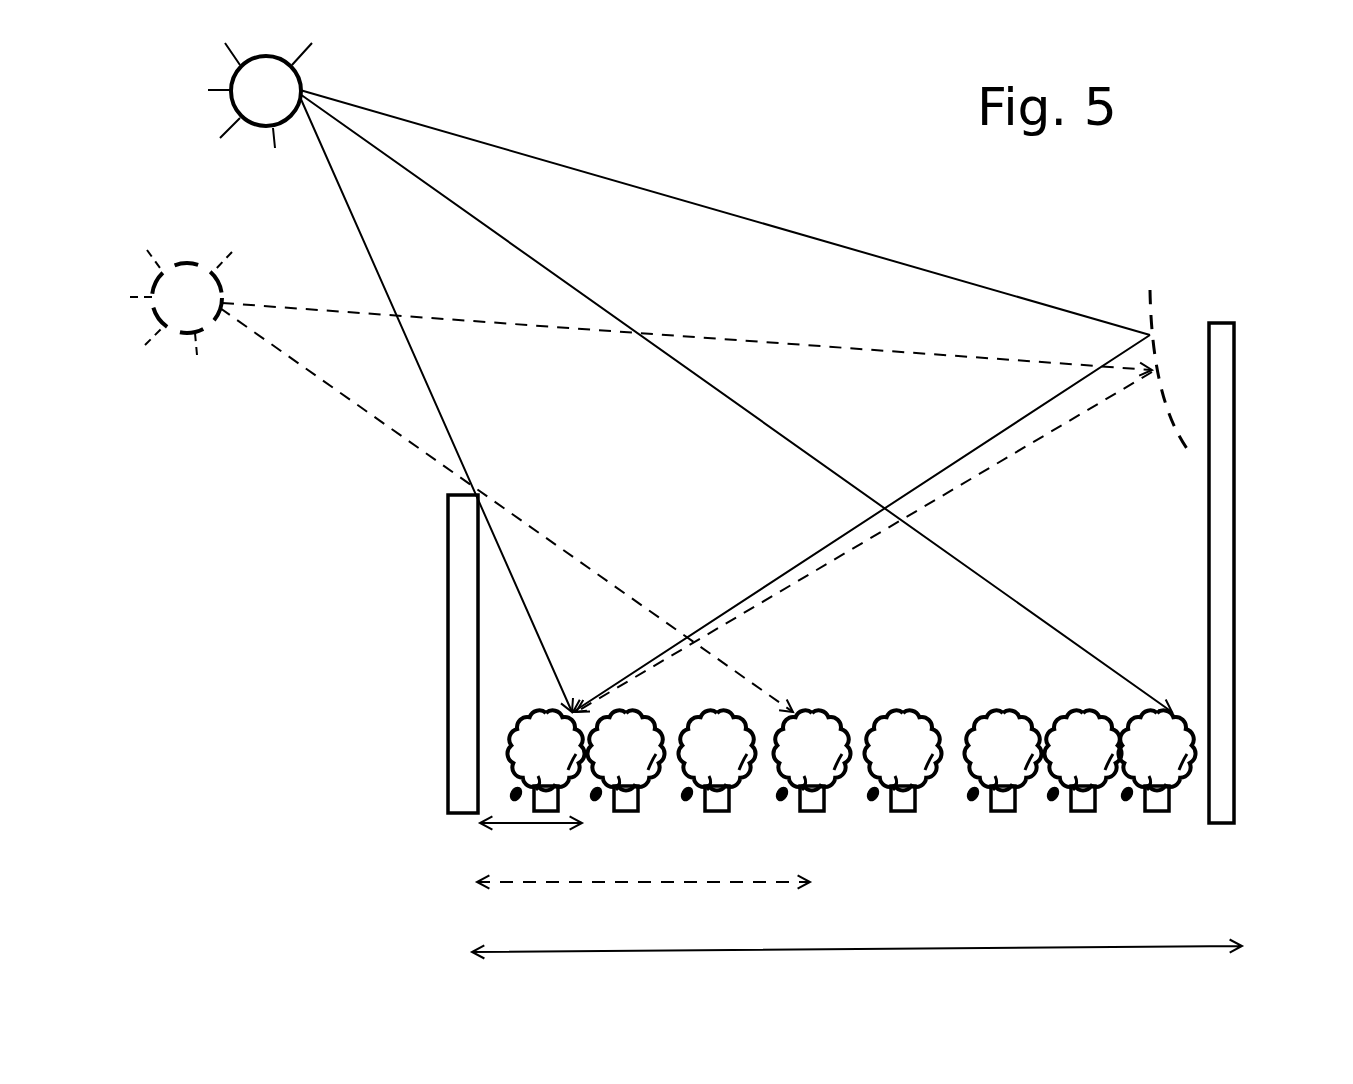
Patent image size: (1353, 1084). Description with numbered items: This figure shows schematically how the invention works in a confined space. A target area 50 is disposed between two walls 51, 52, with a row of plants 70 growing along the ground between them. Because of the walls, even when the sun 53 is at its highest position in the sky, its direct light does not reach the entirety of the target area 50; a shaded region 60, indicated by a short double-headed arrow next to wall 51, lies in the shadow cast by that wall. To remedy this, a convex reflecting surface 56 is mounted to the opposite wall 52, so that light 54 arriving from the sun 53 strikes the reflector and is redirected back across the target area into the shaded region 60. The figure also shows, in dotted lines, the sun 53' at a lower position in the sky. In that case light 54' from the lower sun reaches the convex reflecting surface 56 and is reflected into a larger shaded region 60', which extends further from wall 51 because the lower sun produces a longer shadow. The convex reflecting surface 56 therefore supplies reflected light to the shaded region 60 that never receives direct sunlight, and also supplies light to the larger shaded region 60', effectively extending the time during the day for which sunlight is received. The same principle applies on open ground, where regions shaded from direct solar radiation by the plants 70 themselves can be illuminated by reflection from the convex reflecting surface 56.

The target area 50 is at (857, 933).
The wall 51 is at (436, 654).
The wall 52 is at (1244, 573).
The sun 53 is at (260, 95).
The sun 53' is at (181, 302).
The light 54 is at (725, 212).
The light 54' is at (687, 339).
The convex reflecting surface 56 is at (1175, 366).
The shaded region 60 is at (531, 845).
The shaded region 60' is at (643, 905).
The plants 70 is at (851, 742).